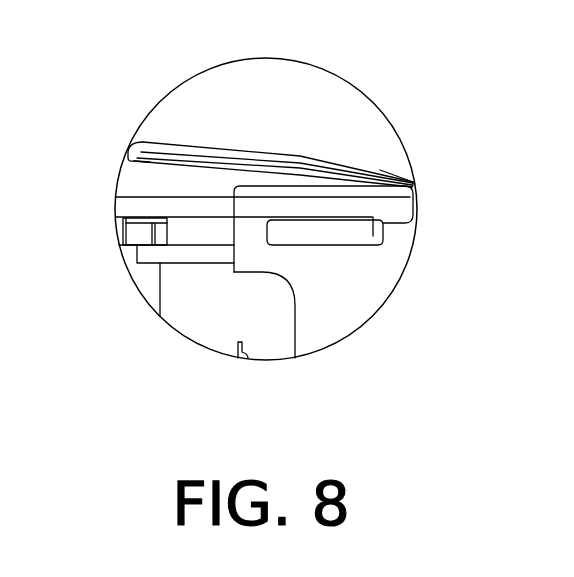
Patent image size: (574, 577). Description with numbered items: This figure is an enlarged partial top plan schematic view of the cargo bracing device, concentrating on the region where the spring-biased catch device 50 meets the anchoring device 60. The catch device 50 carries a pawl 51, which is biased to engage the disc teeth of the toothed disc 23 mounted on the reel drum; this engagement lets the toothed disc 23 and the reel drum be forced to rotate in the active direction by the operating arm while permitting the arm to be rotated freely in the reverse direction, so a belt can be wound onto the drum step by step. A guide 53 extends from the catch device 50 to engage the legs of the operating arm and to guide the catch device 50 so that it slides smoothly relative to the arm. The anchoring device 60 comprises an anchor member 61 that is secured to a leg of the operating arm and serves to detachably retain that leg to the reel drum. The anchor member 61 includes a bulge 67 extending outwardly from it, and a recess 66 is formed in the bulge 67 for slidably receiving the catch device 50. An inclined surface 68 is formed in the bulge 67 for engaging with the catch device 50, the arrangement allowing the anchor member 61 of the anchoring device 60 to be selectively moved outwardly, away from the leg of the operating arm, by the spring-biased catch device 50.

The toothed disc 23 is at (137, 235).
The spring-biased catch device 50 is at (342, 323).
The pawl 51 is at (242, 265).
The guide 53 is at (352, 235).
The anchoring device 60 is at (412, 182).
The anchor member 61 is at (128, 154).
The recess 66 is at (167, 158).
The bulge 67 is at (268, 155).
The inclined surface 68 is at (357, 177).